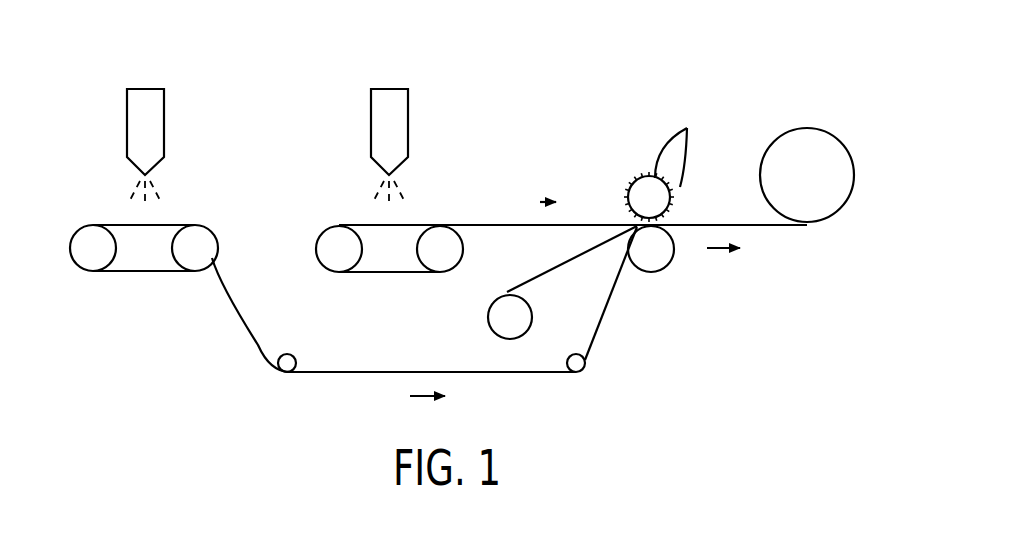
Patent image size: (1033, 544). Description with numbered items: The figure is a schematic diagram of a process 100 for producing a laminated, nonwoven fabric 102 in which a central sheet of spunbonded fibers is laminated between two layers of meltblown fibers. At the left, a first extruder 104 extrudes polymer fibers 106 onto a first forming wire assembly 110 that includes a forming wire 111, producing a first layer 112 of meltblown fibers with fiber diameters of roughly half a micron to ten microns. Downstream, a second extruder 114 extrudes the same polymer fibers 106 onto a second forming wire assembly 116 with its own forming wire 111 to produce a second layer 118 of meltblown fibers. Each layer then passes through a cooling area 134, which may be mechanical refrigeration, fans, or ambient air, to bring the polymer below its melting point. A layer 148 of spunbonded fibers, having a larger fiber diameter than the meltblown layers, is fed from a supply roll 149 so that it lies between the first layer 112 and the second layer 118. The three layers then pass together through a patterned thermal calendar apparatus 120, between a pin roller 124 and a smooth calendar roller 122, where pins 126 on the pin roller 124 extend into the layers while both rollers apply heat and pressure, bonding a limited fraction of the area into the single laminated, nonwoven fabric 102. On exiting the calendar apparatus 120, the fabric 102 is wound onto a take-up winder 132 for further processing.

The process 100 is at (704, 57).
The laminated, nonwoven fabric 102 is at (709, 209).
The first extruder 104 is at (175, 126).
The polymer fibers 106 is at (118, 183).
The first forming wire assembly 110 is at (131, 281).
The forming wire 111 is at (147, 272).
The first layer 112 is at (255, 345).
The second extruder 114 is at (356, 106).
The second forming wire assembly 116 is at (380, 283).
The second layer 118 is at (485, 222).
The patterned thermal calendar apparatus 120 is at (642, 163).
The smooth calendar roller 122 is at (667, 268).
The pin roller 124 is at (634, 180).
The pins 126 is at (682, 140).
The take-up winder 132 is at (840, 143).
The cooling area 134 is at (320, 392).
The layer of spunbonded fibers 148 is at (568, 262).
The supply roll 149 is at (532, 316).